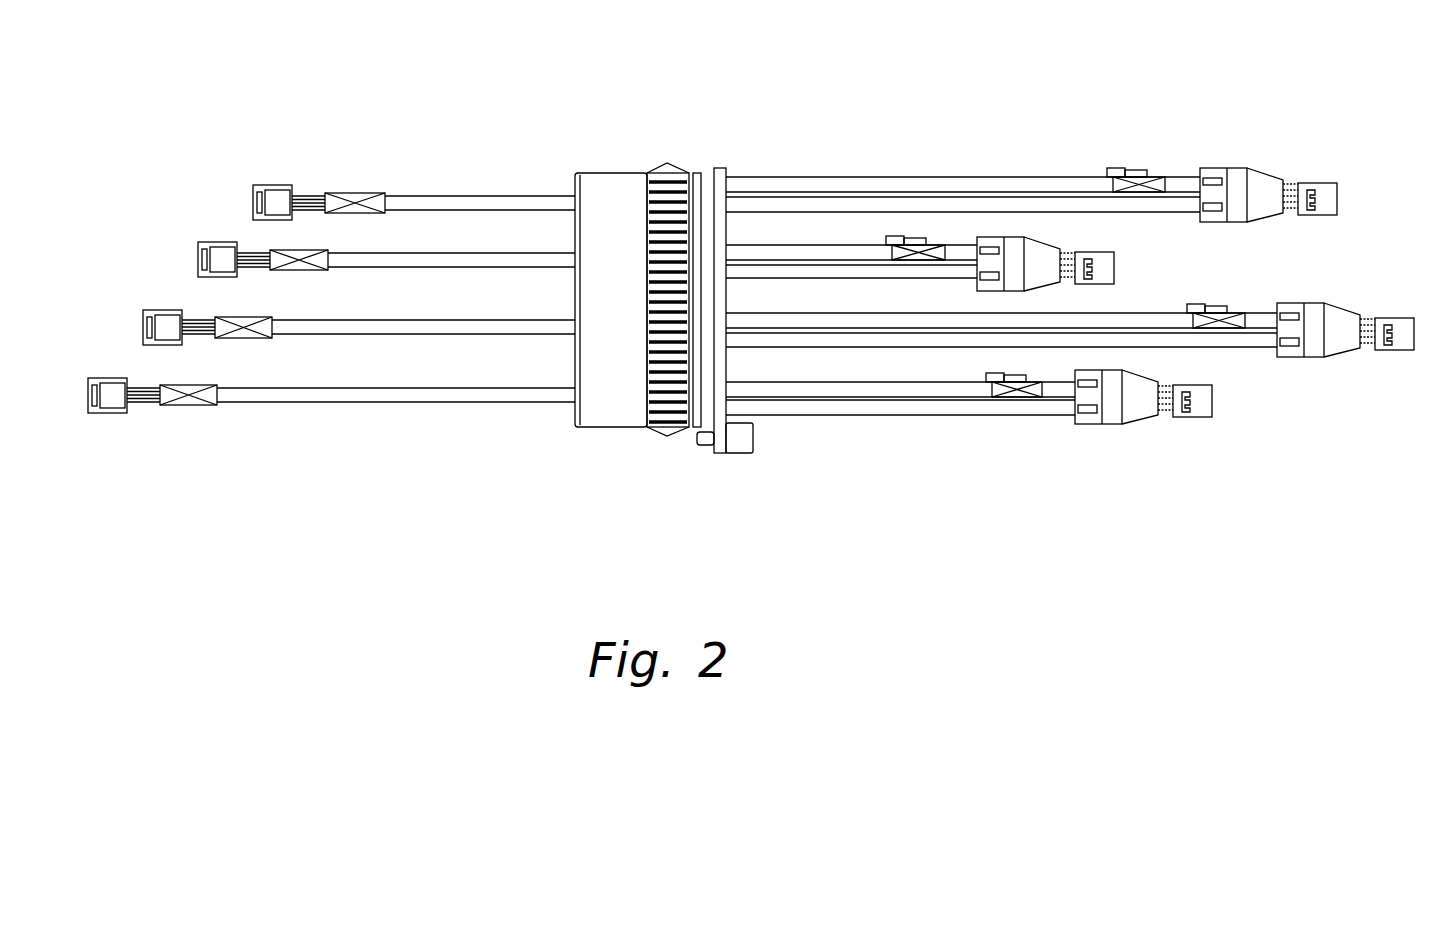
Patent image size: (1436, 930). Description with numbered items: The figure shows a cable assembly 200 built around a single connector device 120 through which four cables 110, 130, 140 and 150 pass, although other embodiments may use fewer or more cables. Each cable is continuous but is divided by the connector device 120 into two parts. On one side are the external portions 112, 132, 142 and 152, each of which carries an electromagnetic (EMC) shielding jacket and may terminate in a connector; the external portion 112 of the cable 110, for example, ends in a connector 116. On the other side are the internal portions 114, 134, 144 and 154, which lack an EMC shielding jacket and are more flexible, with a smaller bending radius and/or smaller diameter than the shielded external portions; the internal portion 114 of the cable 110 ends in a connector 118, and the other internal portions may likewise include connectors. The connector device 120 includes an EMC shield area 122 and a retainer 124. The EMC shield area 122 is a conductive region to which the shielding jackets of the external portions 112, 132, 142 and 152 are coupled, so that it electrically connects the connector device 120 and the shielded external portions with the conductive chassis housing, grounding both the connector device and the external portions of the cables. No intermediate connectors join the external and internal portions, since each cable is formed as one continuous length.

The cable assembly 200 is at (218, 80).
The cable 110 is at (762, 178).
The external portion 112 is at (1090, 195).
The internal portion 114 is at (417, 197).
The connector 116 is at (1248, 178).
The connector 118 is at (275, 183).
The connector device 120 is at (607, 172).
The EMC shield area 122 is at (660, 434).
The retainer 124 is at (742, 453).
The cable 130 is at (762, 246).
The external portion 132 is at (888, 262).
The internal portion 134 is at (417, 255).
The cable 140 is at (762, 314).
The external portion 142 is at (885, 330).
The internal portion 144 is at (417, 321).
The cable 150 is at (762, 383).
The external portion 152 is at (885, 398).
The internal portion 154 is at (417, 389).